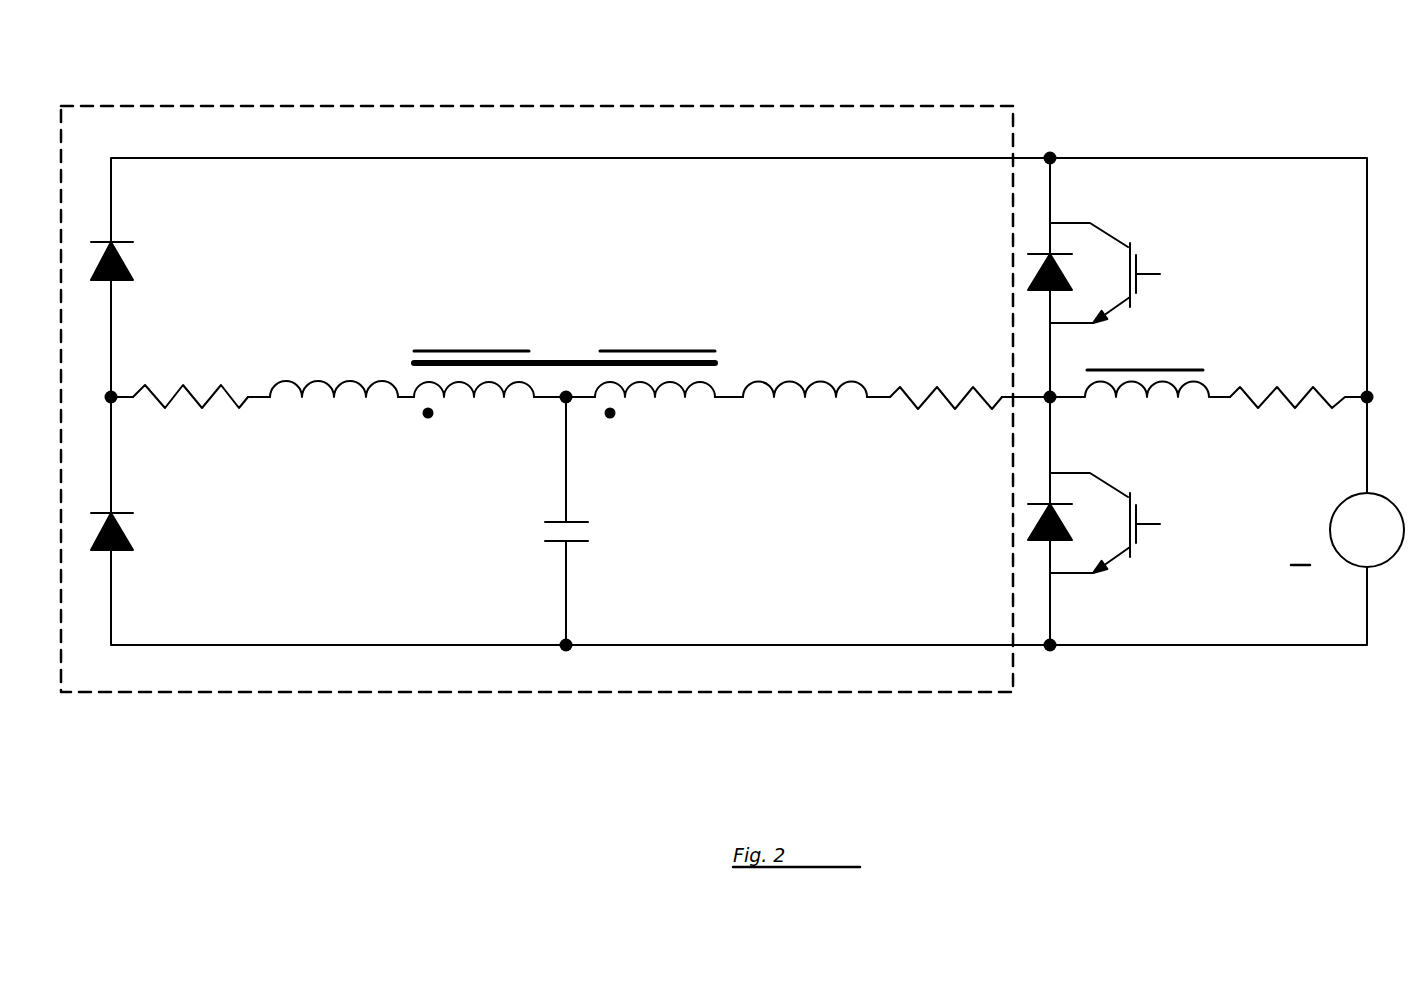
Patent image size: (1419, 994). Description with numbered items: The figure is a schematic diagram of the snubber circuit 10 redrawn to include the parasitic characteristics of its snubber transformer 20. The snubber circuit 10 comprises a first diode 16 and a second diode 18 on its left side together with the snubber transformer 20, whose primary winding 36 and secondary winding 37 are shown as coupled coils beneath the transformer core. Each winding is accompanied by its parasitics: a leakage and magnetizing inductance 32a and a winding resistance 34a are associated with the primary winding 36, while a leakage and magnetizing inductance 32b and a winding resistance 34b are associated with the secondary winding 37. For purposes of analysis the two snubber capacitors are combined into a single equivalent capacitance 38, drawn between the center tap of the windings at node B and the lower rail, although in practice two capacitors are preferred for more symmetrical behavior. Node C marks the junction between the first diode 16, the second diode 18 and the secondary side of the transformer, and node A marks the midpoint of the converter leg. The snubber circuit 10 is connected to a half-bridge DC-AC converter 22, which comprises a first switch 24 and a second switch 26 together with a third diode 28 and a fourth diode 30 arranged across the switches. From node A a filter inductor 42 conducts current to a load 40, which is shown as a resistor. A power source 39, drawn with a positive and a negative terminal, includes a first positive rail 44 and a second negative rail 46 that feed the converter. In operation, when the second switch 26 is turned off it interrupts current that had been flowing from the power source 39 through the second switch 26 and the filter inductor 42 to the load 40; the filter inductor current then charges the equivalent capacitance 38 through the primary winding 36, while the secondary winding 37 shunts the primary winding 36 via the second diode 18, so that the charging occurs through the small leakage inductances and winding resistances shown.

The snubber circuit 10 is at (445, 106).
The first diode 16 is at (121, 242).
The second diode 18 is at (117, 513).
The snubber transformer 20 is at (567, 327).
The half-bridge DC-AC converter 22 is at (1200, 111).
The first switch 24 is at (1110, 237).
The second switch 26 is at (1110, 491).
The third diode 28 is at (1041, 250).
The fourth diode 30 is at (1041, 502).
The leakage and magnetizing inductance 32a is at (799, 403).
The leakage and magnetizing inductance 32b is at (343, 378).
The winding resistance 34a is at (916, 407).
The winding resistance 34b is at (224, 393).
The primary winding 36 is at (684, 403).
The secondary winding 37 is at (474, 403).
The equivalent capacitance 38 is at (549, 542).
The power source 39 is at (1329, 530).
The load 40 is at (1277, 386).
The filter inductor 42 is at (1184, 361).
The first (positive) rail 44 is at (1366, 465).
The second (negative) rail 46 is at (1366, 628).
The node A is at (1050, 397).
The node B is at (566, 397).
The node C is at (111, 397).